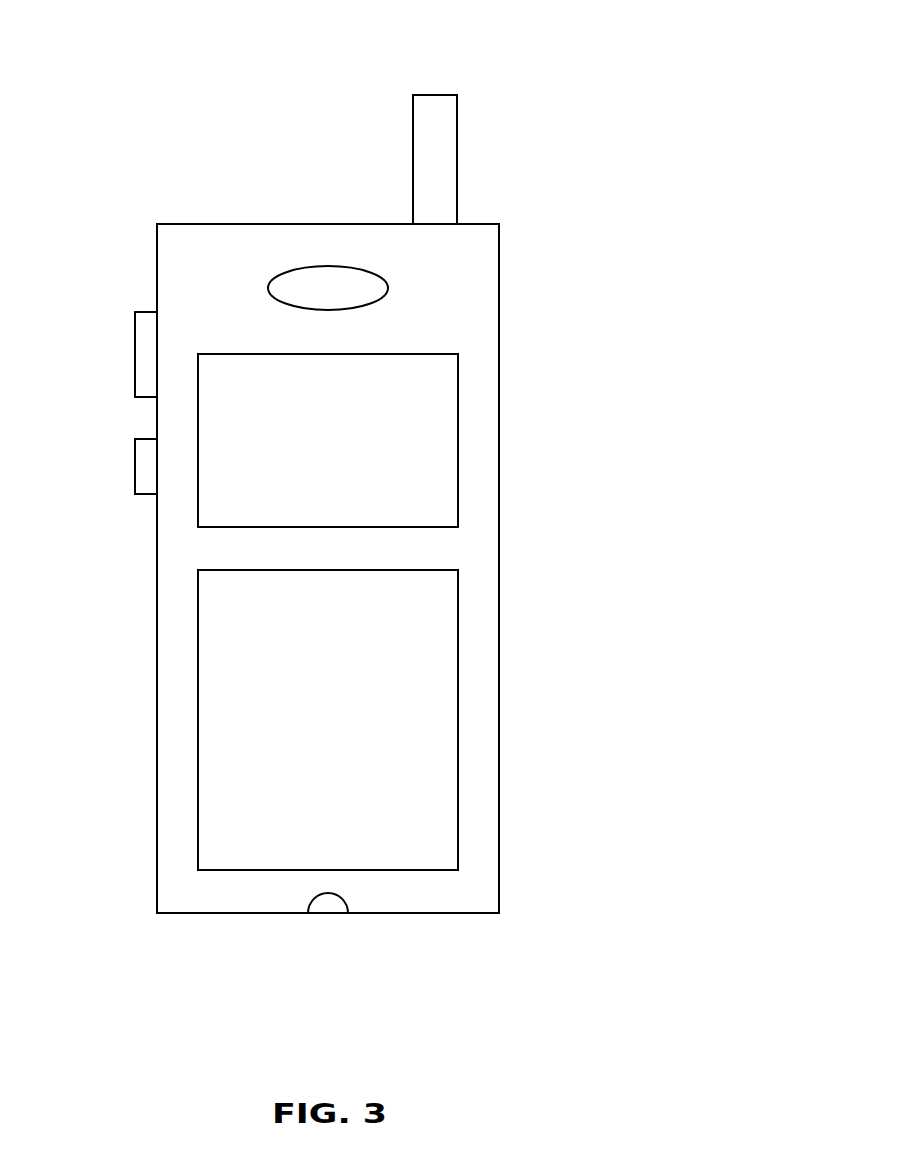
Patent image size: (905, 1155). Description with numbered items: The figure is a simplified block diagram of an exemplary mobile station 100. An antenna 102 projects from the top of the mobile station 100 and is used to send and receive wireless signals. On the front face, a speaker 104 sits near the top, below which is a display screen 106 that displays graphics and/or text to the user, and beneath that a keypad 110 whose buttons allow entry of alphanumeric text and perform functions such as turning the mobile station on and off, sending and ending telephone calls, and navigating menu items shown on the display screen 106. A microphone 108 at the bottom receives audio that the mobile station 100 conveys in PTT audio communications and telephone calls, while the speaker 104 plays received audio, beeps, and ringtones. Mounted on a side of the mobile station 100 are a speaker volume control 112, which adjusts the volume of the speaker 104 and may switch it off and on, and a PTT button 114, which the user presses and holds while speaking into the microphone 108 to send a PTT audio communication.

The mobile station 100 is at (153, 892).
The antenna 102 is at (435, 93).
The speaker 104 is at (328, 266).
The display screen 106 is at (458, 440).
The microphone 108 is at (328, 916).
The keypad 110 is at (458, 720).
The speaker volume control 112 is at (135, 352).
The PTT button 114 is at (135, 463).